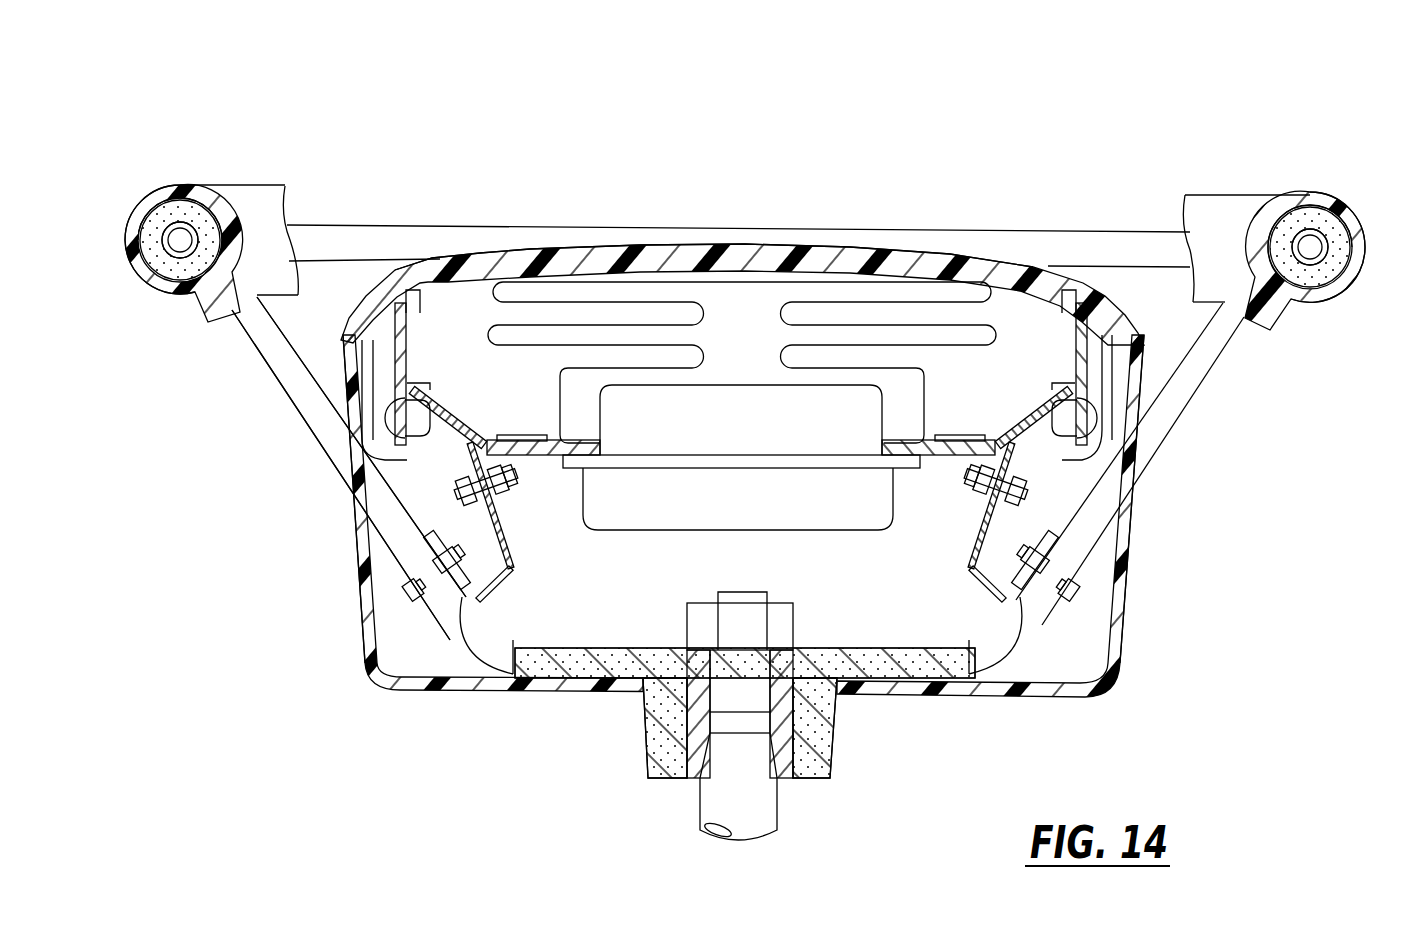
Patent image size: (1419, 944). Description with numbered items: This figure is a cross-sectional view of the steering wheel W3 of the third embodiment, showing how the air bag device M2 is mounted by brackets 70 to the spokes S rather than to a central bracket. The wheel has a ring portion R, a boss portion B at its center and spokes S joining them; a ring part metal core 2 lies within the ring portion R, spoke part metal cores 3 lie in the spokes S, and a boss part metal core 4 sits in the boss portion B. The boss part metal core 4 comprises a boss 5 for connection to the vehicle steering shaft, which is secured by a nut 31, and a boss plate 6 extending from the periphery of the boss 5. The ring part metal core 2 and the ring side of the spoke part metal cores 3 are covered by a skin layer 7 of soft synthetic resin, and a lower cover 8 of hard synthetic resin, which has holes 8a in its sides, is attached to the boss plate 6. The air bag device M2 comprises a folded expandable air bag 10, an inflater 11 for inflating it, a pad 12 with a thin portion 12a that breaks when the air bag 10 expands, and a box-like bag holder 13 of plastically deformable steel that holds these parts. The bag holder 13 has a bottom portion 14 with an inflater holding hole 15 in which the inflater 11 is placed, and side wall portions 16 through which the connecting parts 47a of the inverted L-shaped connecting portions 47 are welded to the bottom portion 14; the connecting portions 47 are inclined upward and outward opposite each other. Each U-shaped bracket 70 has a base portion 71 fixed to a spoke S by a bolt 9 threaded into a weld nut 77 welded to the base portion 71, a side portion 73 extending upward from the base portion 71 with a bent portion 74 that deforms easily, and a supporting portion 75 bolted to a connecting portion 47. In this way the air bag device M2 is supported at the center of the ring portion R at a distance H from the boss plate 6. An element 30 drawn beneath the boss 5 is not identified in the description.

The ring part metal core 2 is at (178, 222).
The spoke part metal cores 3 is at (228, 305).
The boss part metal core 4 is at (625, 775).
The boss 5 is at (780, 775).
The boss plate 6 is at (893, 668).
The skin layer 7 is at (1363, 242).
The lower cover 8 is at (370, 668).
The holes 8a is at (352, 528).
The bolt 9 is at (413, 598).
The air bag 10 is at (640, 285).
The inflater 11 is at (760, 512).
The pad 12 is at (855, 262).
The thin portion 12a is at (752, 268).
The bag holder 13 is at (912, 400).
The bottom portion 14 is at (977, 443).
The inflater holding hole 15 is at (608, 445).
The side wall portions 16 is at (363, 456).
The cable 30 is at (713, 808).
The nut 31 is at (698, 615).
The connecting portions 47 is at (467, 417).
The connecting parts 47a is at (515, 437).
The bracket 70 is at (530, 578).
The base portion 71 is at (457, 637).
The side portion 73 is at (487, 588).
The bent portion 74 is at (511, 567).
The supporting portion 75 is at (507, 530).
The weld nut 77 is at (437, 544).
The air bag device M2 is at (505, 246).
The ring portion R is at (1226, 213).
The spokes S is at (1282, 312).
The steering wheel W3 is at (1303, 118).
The distance H is at (828, 604).
The boss portion B is at (848, 838).